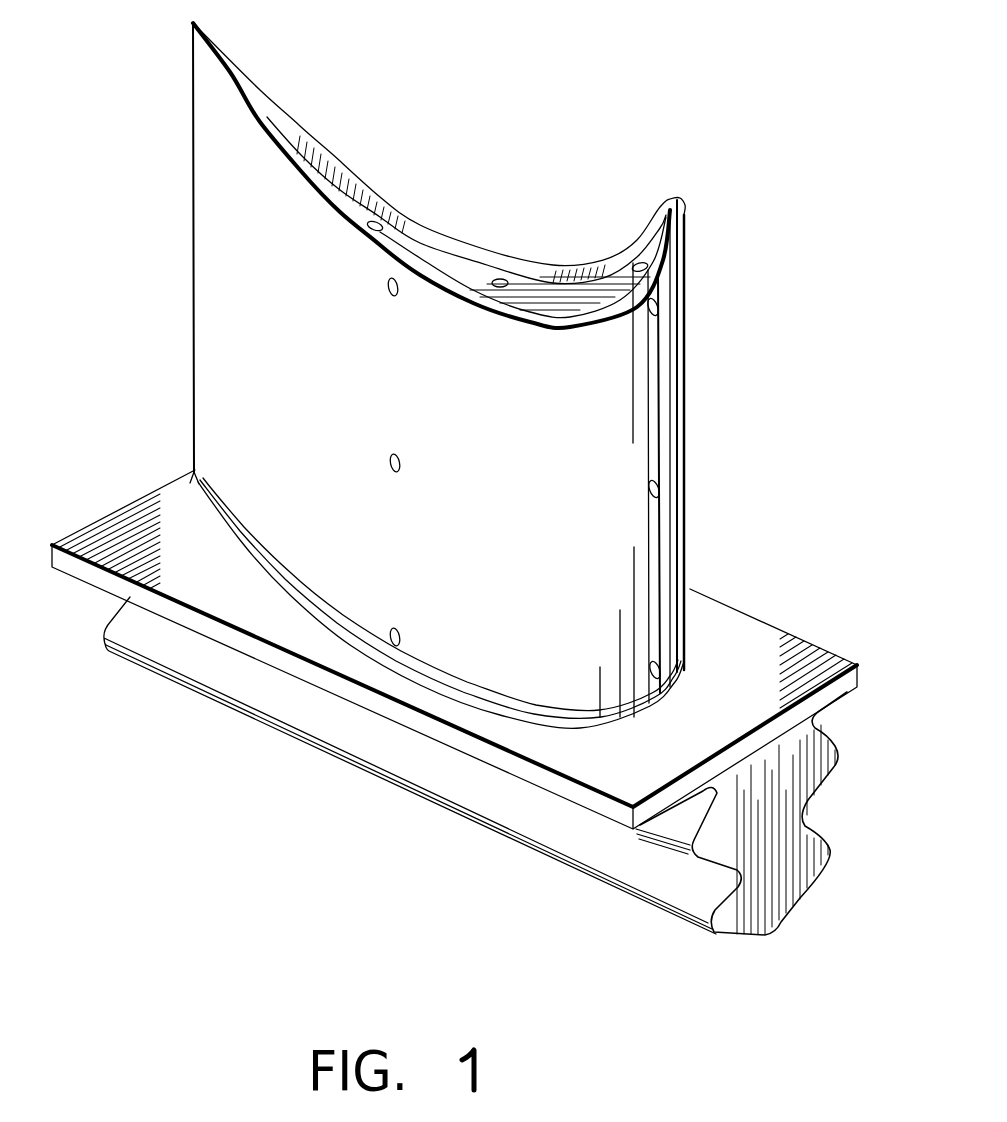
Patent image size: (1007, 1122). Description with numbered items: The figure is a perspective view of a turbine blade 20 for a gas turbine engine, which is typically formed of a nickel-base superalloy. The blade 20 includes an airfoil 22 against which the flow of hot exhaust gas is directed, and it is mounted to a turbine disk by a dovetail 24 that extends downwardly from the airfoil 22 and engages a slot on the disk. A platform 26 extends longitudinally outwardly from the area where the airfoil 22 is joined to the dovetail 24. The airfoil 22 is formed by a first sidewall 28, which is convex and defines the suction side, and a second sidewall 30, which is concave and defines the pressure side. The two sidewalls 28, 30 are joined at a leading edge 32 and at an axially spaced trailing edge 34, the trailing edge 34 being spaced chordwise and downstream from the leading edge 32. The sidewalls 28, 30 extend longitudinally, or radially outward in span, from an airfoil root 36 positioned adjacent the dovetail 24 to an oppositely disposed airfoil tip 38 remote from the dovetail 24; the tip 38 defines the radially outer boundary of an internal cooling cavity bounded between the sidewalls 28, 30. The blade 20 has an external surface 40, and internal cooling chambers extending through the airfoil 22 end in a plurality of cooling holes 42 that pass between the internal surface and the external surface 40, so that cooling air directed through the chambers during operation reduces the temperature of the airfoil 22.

The turbine blade 20 is at (145, 298).
The airfoil 22 is at (236, 190).
The dovetail 24 is at (112, 620).
The platform 26 is at (113, 528).
The first sidewall 28 is at (227, 389).
The second sidewall 30 is at (330, 158).
The leading edge 32 is at (681, 194).
The trailing edge 34 is at (190, 25).
The airfoil root 36 is at (423, 657).
The airfoil tip 38 is at (433, 233).
The external surface 40 is at (570, 506).
The cooling holes 42 is at (652, 303).